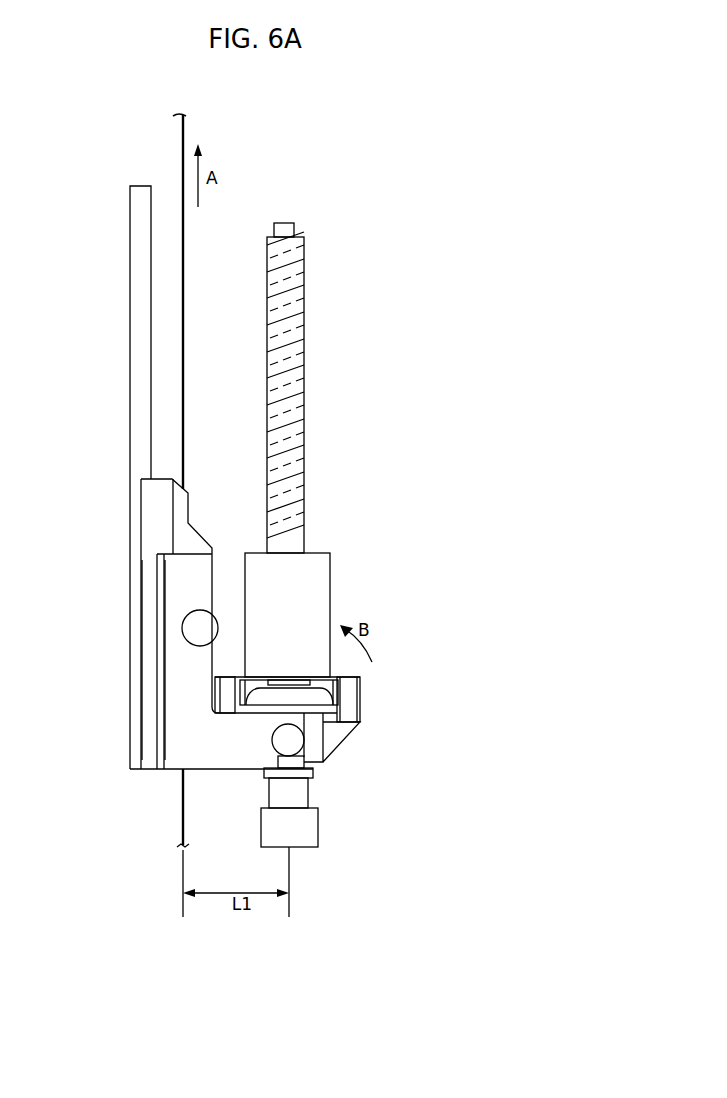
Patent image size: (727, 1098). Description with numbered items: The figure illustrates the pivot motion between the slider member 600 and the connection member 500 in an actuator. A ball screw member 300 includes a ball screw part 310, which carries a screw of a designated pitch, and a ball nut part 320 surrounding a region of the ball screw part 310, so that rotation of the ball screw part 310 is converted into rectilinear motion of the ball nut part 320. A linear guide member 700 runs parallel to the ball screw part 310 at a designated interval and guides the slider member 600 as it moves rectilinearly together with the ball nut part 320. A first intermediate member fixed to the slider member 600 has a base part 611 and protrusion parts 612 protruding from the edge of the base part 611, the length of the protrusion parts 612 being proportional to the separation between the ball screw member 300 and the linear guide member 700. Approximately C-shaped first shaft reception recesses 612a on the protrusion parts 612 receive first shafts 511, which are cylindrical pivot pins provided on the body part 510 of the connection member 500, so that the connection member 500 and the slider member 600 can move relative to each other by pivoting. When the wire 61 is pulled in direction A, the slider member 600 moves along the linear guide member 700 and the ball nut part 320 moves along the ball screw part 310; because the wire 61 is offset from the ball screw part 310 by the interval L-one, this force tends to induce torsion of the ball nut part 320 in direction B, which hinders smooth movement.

The linear guide member 700 is at (122, 268).
The wire 61 is at (185, 262).
The slider member 600 is at (146, 531).
The base part 611 is at (176, 745).
The protrusion part 612 is at (238, 750).
The ball screw part 310 is at (306, 305).
The ball screw member 300 is at (356, 352).
The ball nut part 320 is at (321, 566).
The connection member 500 is at (374, 692).
The body part 510 is at (320, 731).
The first shaft 511 is at (304, 745).
The first shaft reception recess 612a is at (301, 750).